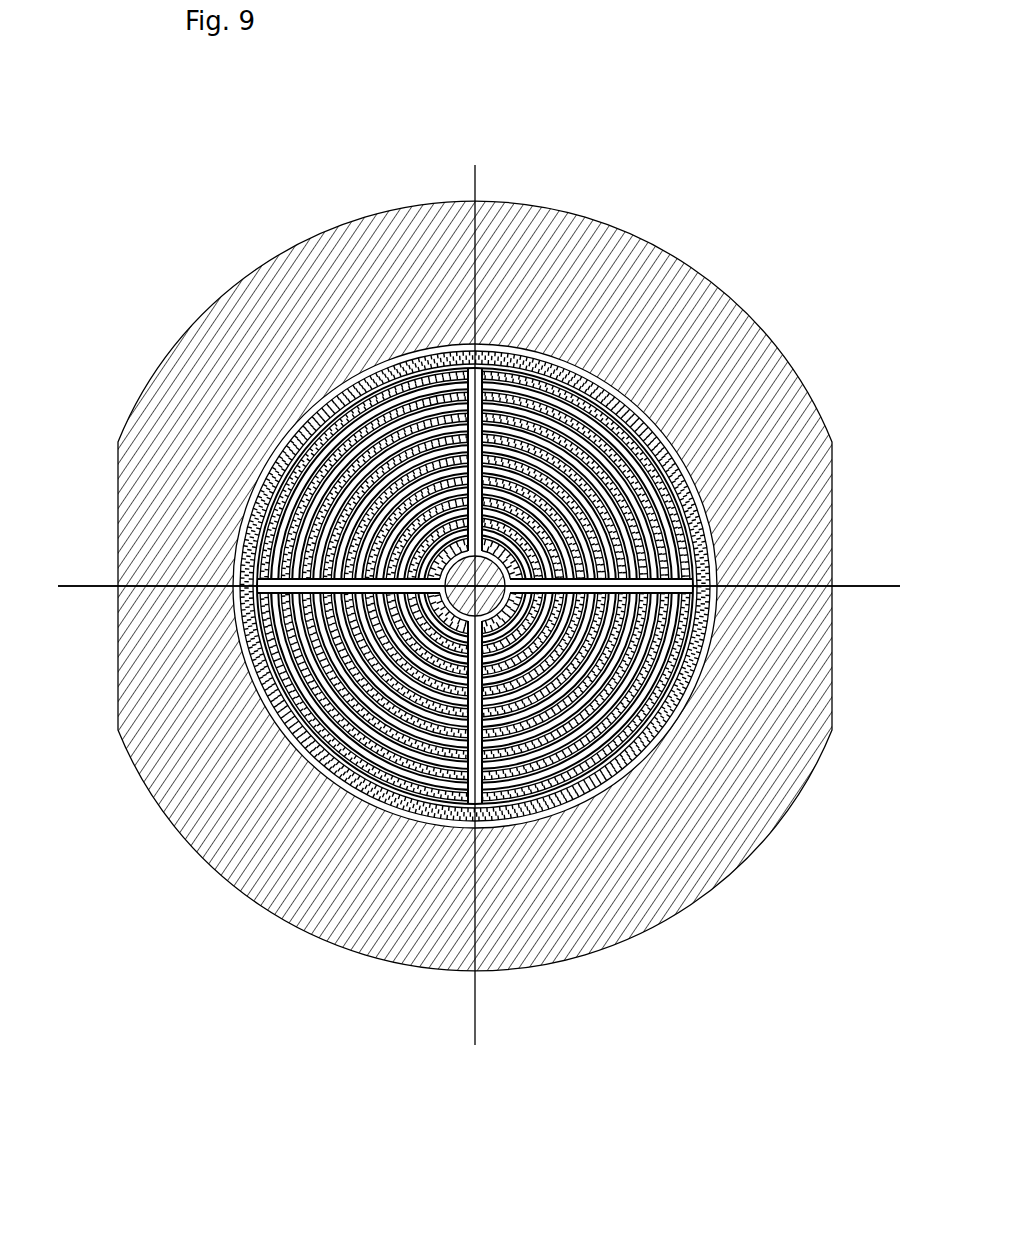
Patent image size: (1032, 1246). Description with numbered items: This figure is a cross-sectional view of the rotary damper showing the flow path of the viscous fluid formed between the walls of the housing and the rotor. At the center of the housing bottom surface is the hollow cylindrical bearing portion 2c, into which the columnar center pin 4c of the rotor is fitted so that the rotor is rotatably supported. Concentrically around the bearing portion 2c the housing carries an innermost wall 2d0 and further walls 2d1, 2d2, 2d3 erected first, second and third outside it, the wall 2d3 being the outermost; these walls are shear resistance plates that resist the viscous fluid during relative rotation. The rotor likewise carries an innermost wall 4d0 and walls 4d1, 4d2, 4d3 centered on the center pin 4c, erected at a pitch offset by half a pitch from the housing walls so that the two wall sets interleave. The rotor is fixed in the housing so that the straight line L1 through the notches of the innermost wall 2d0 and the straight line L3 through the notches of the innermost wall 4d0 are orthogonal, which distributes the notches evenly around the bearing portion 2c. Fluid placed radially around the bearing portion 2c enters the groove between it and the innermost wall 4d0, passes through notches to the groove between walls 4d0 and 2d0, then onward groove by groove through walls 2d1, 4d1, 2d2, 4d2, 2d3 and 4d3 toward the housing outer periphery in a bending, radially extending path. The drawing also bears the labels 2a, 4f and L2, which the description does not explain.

The outer core body 2a is at (118, 630).
The bearing portion 2c is at (512, 562).
The innermost wall 2d0 is at (500, 520).
The wall 2d1 is at (528, 495).
The wall 2d2 is at (565, 470).
The wall 2d3 is at (612, 455).
The center pin 4c is at (435, 563).
The innermost wall 4d0 is at (455, 520).
The wall 4d1 is at (427, 492).
The wall 4d2 is at (380, 470).
The wall 4d3 is at (340, 455).
The outer ring 4f is at (265, 488).
The straight line L1 is at (473, 624).
The second axis L2 is at (479, 573).
The straight line L3 is at (479, 604).